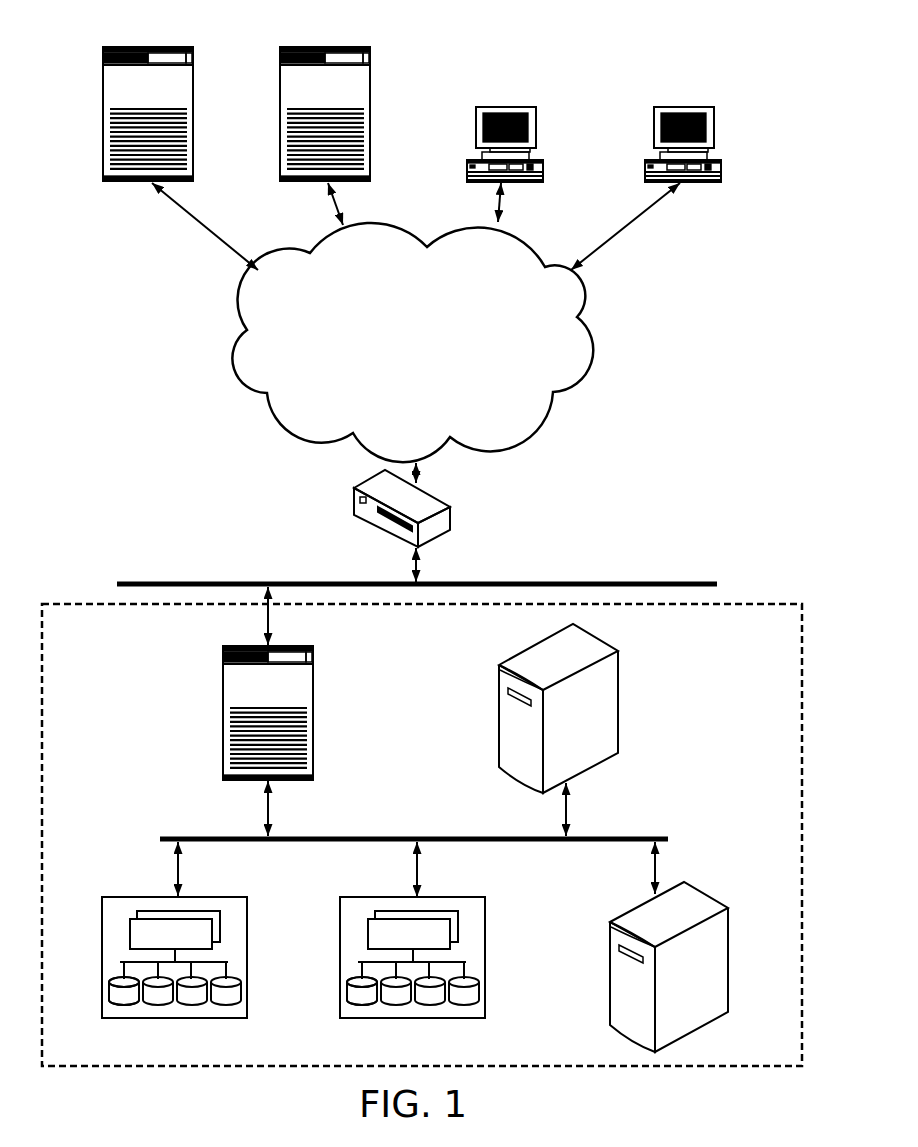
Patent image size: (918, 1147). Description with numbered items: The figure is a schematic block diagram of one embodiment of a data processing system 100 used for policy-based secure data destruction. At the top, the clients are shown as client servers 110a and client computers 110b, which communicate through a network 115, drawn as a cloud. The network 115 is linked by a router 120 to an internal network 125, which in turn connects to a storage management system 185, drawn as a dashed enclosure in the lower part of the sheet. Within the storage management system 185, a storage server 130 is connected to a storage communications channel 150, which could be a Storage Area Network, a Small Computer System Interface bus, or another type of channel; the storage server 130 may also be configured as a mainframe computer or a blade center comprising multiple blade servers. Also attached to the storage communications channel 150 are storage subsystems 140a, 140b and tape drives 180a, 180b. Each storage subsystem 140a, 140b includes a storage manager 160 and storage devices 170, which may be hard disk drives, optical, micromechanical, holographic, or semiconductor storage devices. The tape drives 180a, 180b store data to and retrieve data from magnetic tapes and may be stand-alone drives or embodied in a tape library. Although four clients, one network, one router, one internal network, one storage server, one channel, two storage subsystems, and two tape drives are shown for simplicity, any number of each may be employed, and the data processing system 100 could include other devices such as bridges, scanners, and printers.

The data processing system 100 is at (771, 55).
The client server 110a is at (192, 45).
The client computer 110b is at (538, 108).
The network 115 is at (394, 362).
The router 120 is at (449, 507).
The internal network 125 is at (136, 582).
The storage server 130 is at (316, 721).
The storage subsystem 140a is at (249, 900).
The storage subsystem 140b is at (487, 900).
The storage communications channel 150 is at (355, 836).
The storage manager 160 is at (130, 933).
The storage device 170 is at (112, 990).
The tape drive 180a is at (620, 681).
The tape drive 180b is at (732, 936).
The storage management system 185 is at (744, 604).